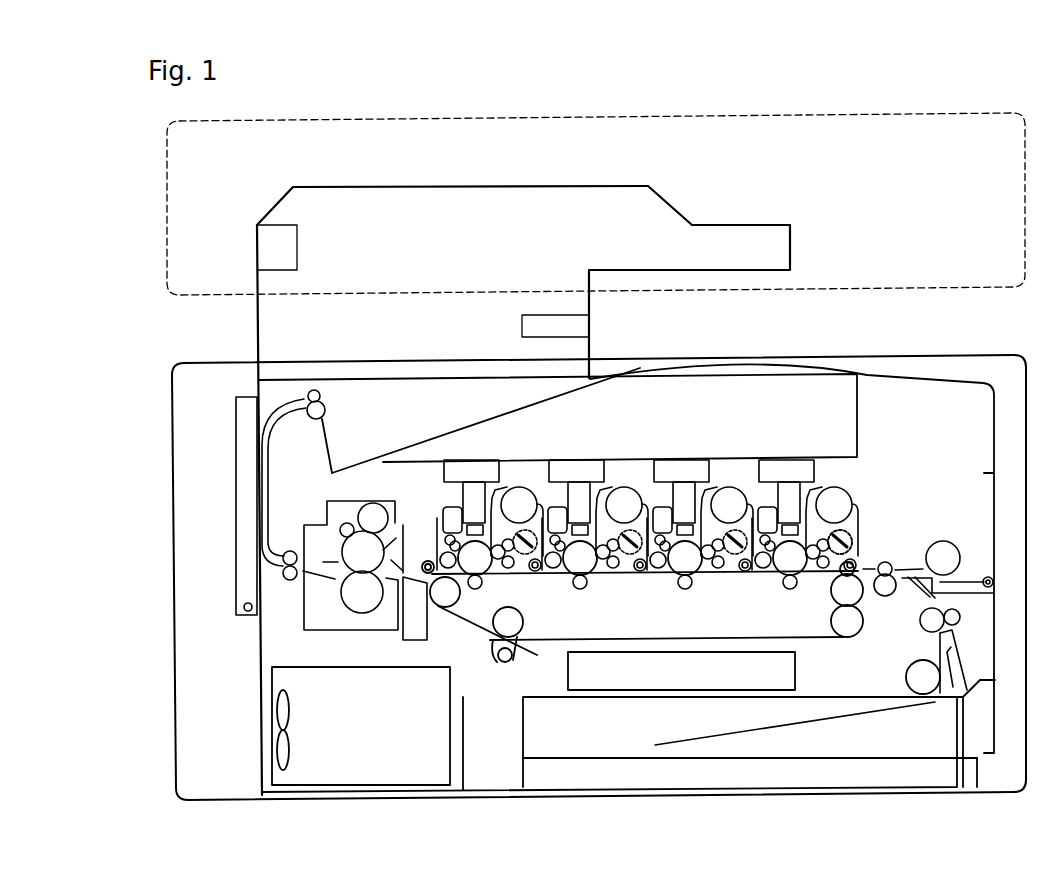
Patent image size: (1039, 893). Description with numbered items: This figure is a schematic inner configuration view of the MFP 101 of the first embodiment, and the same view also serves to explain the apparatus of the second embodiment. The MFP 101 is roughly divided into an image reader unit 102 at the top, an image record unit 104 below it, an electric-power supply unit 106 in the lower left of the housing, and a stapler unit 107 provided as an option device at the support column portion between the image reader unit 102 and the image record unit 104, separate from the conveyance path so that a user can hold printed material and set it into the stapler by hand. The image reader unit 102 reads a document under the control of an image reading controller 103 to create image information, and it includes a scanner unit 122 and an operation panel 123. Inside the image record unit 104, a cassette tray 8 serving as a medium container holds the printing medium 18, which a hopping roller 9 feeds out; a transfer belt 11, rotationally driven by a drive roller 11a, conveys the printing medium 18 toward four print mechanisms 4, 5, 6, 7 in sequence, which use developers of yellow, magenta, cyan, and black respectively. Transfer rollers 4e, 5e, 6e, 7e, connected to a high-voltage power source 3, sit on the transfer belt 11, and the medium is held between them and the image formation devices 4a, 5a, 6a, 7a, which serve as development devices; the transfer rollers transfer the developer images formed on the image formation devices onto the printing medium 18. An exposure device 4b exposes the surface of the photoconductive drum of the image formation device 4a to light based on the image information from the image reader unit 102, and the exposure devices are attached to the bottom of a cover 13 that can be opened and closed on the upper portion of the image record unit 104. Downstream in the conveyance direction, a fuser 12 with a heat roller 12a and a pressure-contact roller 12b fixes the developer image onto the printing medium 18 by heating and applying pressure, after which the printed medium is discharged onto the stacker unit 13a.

The MFP 101 is at (806, 827).
The image reader unit 102 is at (960, 113).
The image reading controller 103 is at (257, 248).
The image record unit 104 is at (963, 355).
The electric-power supply unit 106 is at (450, 690).
The stapler unit 107 is at (590, 327).
The scanner unit 122 is at (478, 185).
The operation panel 123 is at (738, 223).
The cover 13 is at (712, 362).
The stacker unit 13a is at (435, 441).
The fuser 12 is at (349, 582).
The heat roller 12a is at (403, 525).
The pressure-contact roller 12b is at (341, 593).
The transfer belt 11 is at (827, 640).
The drive roller 11a is at (440, 613).
The print mechanism 7 is at (525, 495).
The print mechanism 6 is at (630, 495).
The print mechanism 5 is at (738, 495).
The print mechanism 4 is at (843, 495).
The image formation device 7a is at (523, 577).
The image formation device 6a is at (632, 575).
The image formation device 5a is at (737, 575).
The image formation device 4a is at (860, 512).
The exposure device 4b is at (858, 526).
The transfer roller 7e is at (472, 590).
The transfer roller 6e is at (580, 590).
The transfer roller 5e is at (685, 590).
The transfer roller 4e is at (787, 590).
The high-voltage power source 3 is at (568, 677).
The cassette tray 8 is at (830, 697).
The hopping roller 9 is at (912, 660).
The printing medium 18 is at (870, 757).